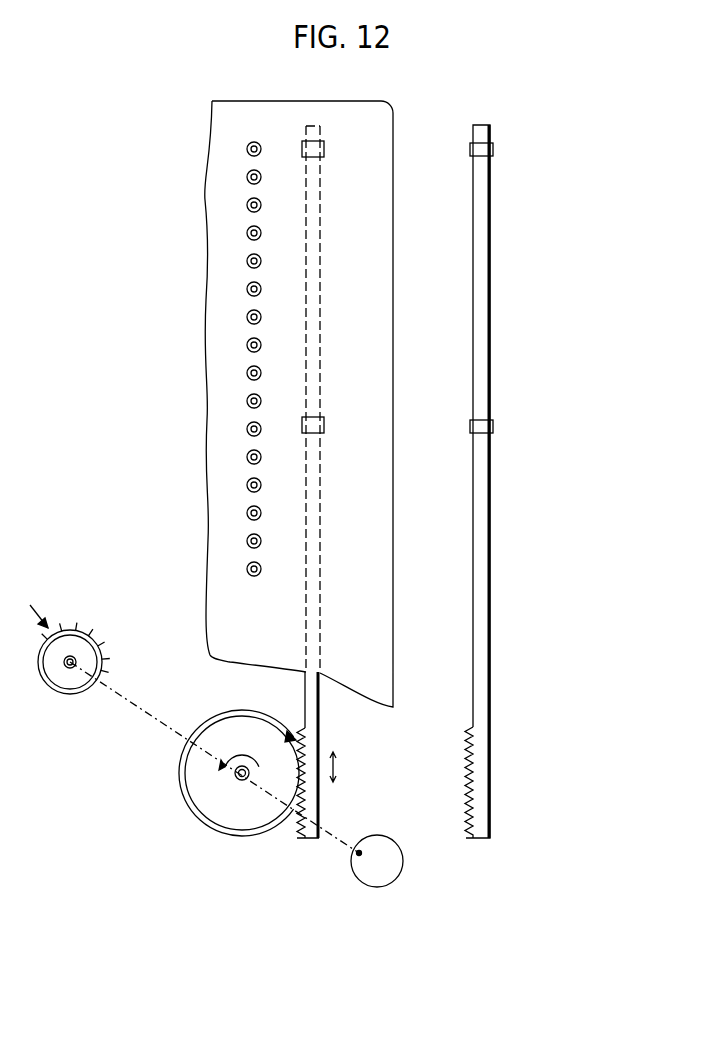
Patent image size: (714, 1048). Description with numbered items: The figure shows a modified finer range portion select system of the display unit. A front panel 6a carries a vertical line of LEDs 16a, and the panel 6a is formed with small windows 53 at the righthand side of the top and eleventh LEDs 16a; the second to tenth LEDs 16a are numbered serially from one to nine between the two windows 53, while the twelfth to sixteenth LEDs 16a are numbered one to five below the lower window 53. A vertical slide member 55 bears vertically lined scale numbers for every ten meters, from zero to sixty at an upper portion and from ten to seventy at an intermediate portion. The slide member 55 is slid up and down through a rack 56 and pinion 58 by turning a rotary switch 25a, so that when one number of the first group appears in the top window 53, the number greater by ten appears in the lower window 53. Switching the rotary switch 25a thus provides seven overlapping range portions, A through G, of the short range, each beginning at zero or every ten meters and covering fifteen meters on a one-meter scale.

The front panel 6a is at (222, 167).
The LEDs 16a is at (247, 262).
The small windows 53 is at (324, 148).
The vertical slide member 55 is at (320, 214).
The rack 56 is at (300, 832).
The pinion 58 is at (183, 790).
The rotary switch 25a is at (390, 875).